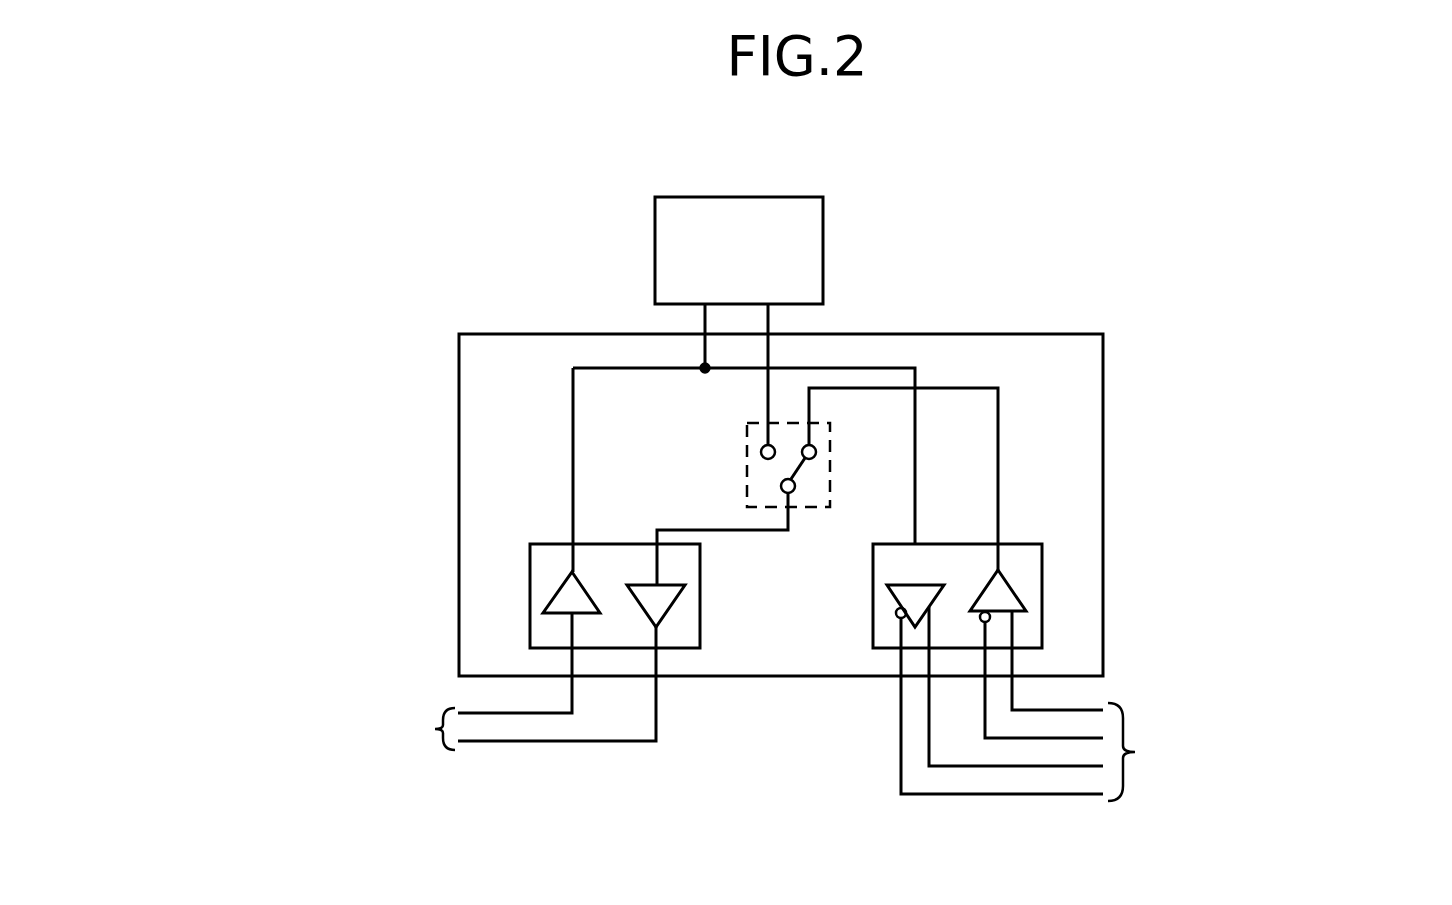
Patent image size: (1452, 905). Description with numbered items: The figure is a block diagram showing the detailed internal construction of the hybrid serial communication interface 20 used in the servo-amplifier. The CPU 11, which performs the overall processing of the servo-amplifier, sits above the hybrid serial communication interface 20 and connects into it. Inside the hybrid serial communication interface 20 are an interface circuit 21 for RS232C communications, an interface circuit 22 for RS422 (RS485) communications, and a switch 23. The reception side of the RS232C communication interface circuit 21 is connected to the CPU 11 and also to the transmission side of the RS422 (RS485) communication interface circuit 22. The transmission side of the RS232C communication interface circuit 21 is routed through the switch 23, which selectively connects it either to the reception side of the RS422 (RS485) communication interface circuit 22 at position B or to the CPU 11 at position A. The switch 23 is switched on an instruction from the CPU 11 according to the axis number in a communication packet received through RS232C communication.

The CPU 11 is at (823, 248).
The hybrid serial communication interface 20 is at (1103, 388).
The RS232C communication interface circuit 21 is at (700, 595).
The RS422 (RS485) communication interface circuit 22 is at (1042, 595).
The switch 23 is at (830, 487).